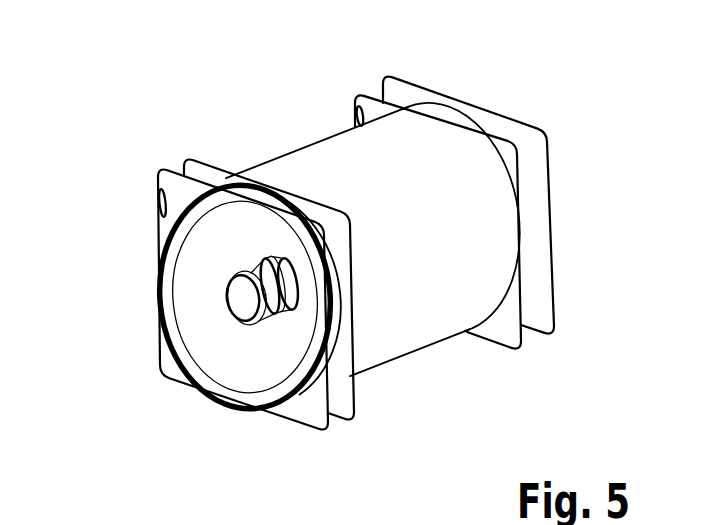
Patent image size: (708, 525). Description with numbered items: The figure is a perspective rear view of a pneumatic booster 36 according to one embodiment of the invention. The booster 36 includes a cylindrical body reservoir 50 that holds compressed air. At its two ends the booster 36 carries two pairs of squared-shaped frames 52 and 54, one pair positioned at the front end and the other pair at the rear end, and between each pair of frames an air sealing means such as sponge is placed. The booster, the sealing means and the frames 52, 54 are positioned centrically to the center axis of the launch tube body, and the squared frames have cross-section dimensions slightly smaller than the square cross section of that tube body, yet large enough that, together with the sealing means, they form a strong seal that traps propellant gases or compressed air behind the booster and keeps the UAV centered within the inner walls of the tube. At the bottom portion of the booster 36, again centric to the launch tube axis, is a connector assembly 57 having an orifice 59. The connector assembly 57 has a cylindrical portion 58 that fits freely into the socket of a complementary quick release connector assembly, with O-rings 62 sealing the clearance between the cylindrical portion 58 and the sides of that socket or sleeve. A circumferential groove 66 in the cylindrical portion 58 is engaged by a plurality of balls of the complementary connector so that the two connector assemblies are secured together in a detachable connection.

The booster 36 is at (208, 68).
The cylindrical body reservoir 50 is at (421, 346).
The squared frames 52 is at (355, 97).
The squared frames 54 is at (317, 415).
The connector assembly 57 is at (240, 352).
The cylindrical portion 58 is at (296, 312).
The orifice 59 is at (241, 299).
The O-rings 62 is at (264, 263).
The circumferential groove 66 is at (276, 312).